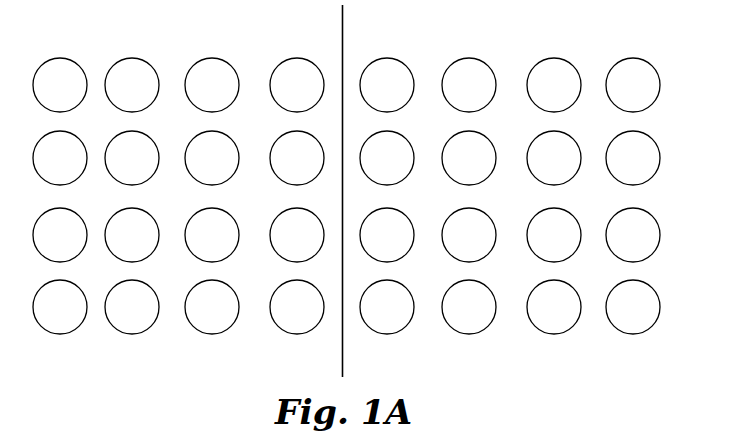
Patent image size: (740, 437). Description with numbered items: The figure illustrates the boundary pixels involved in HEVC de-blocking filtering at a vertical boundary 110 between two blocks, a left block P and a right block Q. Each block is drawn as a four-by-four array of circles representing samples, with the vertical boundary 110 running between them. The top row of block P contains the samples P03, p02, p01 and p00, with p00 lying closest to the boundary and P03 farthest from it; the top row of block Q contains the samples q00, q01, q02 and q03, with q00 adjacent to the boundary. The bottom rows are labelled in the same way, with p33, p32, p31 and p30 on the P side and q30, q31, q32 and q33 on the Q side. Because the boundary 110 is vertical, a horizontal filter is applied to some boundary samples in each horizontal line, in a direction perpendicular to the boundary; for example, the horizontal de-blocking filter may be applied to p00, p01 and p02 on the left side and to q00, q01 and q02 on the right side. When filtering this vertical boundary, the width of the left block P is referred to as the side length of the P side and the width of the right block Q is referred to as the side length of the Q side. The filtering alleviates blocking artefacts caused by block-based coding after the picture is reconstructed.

The vertical boundary 110 is at (343, 40).
The P side block P is at (178, 142).
The Q side block Q is at (510, 142).
The boundary sample P03 is at (60, 85).
The boundary sample p02 is at (132, 85).
The boundary sample p01 is at (212, 85).
The boundary sample p00 is at (297, 85).
The boundary sample q00 is at (387, 85).
The boundary sample q01 is at (469, 85).
The boundary sample q02 is at (554, 85).
The boundary sample q03 is at (633, 85).
The boundary sample p33 is at (60, 307).
The boundary sample p32 is at (132, 307).
The boundary sample p31 is at (212, 307).
The boundary sample p30 is at (297, 307).
The boundary sample q30 is at (387, 307).
The boundary sample q31 is at (469, 307).
The boundary sample q32 is at (554, 307).
The boundary sample q33 is at (633, 307).